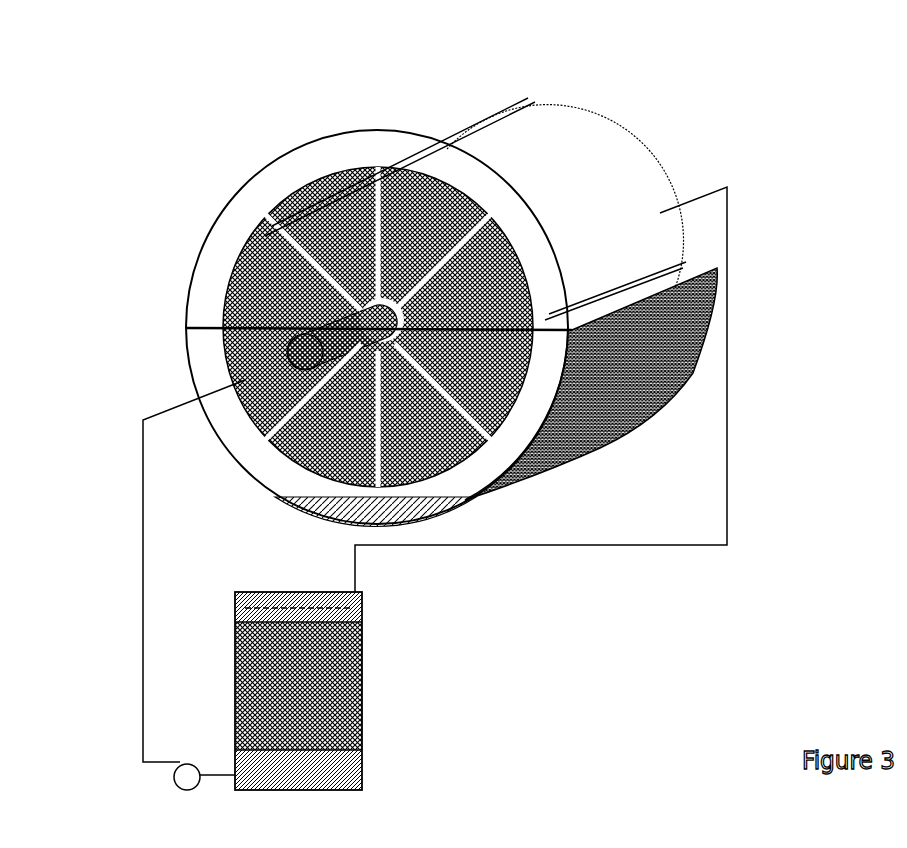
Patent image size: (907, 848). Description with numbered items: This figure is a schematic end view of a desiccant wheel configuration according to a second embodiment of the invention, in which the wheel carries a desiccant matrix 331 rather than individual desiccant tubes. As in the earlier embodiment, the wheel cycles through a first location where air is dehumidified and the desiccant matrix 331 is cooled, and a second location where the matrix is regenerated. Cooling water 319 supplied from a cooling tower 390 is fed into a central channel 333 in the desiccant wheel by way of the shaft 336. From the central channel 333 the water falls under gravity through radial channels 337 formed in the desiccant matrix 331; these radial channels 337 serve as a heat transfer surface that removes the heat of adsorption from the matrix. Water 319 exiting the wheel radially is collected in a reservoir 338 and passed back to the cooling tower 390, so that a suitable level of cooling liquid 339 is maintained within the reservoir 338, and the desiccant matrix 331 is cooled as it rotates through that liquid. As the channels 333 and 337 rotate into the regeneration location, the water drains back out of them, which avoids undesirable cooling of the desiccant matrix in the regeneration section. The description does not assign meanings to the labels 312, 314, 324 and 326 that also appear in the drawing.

The cathode segments 312 is at (405, 426).
The electrical lead 314 is at (707, 287).
The cooling water 319 is at (406, 488).
The housing 324 is at (610, 121).
The anode 326 is at (345, 228).
The desiccant matrix 331 is at (503, 130).
The central channel 333 is at (418, 165).
The shaft 336 is at (331, 173).
The radial channels 337 is at (252, 195).
The reservoir 338 is at (596, 483).
The cooling liquid 339 is at (427, 498).
The cooling tower 390 is at (380, 683).